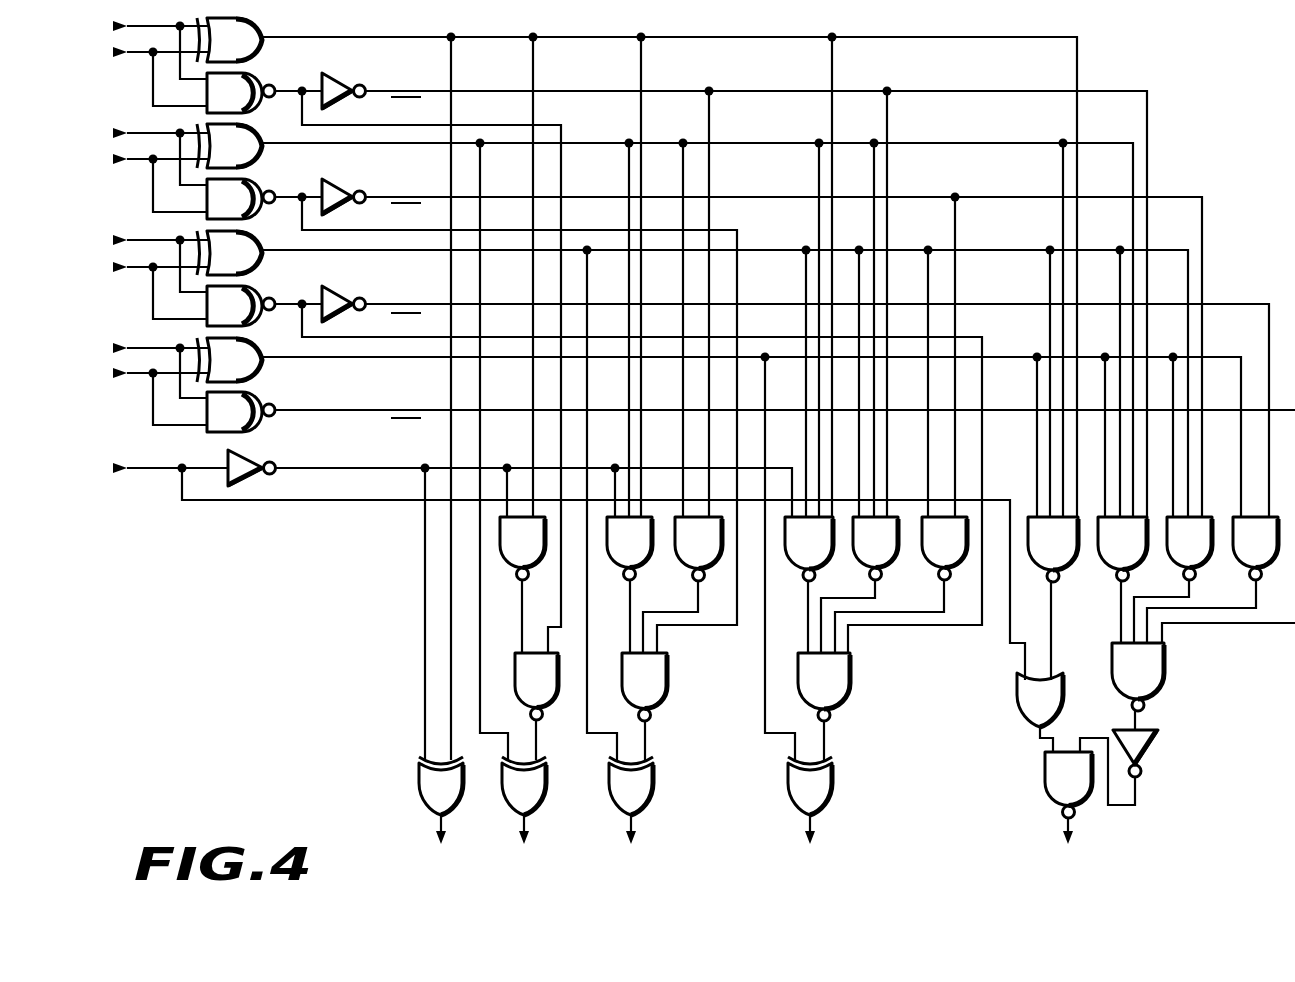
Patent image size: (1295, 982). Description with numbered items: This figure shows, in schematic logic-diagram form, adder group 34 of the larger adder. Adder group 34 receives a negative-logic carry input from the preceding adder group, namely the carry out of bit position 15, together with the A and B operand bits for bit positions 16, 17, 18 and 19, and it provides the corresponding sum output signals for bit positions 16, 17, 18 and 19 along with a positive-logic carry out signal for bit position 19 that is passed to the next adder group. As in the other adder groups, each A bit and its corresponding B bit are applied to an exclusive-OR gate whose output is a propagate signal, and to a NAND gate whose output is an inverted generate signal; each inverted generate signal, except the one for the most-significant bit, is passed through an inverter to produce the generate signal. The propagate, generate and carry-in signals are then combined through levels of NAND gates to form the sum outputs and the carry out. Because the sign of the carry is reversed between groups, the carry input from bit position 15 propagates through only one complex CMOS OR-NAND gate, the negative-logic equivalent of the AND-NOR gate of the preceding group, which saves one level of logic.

The adder group 34 is at (252, 795).
The bit 16 sum stage 16 is at (269, 446).
The bit 17 sum stage 17 is at (310, 499).
The bit 18 sum stage 18 is at (364, 553).
The bit 19 sum stage 19 is at (453, 607).
The carry-in from bit 15 is at (108, 455).